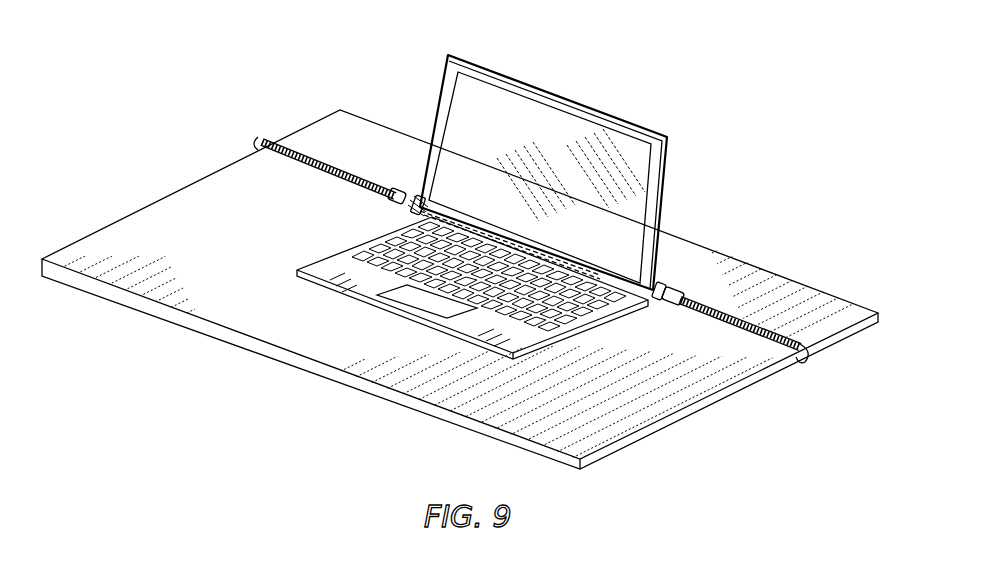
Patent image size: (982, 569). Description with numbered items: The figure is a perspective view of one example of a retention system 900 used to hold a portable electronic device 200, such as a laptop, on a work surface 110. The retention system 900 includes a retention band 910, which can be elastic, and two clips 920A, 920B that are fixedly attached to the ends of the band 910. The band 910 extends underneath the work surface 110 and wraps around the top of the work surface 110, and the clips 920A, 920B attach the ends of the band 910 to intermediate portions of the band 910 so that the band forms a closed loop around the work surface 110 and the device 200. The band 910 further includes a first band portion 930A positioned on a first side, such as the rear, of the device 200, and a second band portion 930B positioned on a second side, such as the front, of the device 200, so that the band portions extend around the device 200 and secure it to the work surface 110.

The work surface 110 is at (167, 210).
The portable electronic device 200 is at (563, 110).
The retention system 900 is at (491, 267).
The retention band 910 is at (285, 142).
The clip 920A is at (392, 196).
The clip 920B is at (676, 294).
The first band portion 930A is at (418, 200).
The second band portion 930B is at (658, 290).